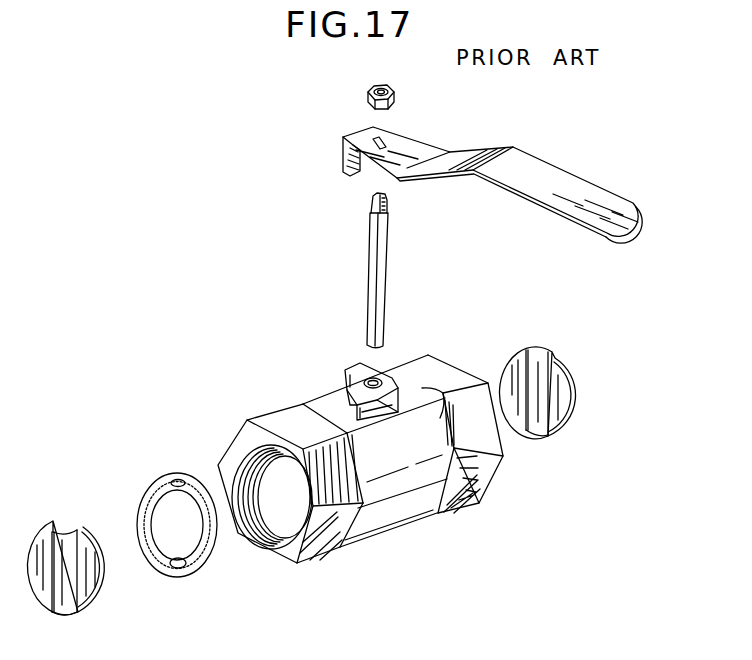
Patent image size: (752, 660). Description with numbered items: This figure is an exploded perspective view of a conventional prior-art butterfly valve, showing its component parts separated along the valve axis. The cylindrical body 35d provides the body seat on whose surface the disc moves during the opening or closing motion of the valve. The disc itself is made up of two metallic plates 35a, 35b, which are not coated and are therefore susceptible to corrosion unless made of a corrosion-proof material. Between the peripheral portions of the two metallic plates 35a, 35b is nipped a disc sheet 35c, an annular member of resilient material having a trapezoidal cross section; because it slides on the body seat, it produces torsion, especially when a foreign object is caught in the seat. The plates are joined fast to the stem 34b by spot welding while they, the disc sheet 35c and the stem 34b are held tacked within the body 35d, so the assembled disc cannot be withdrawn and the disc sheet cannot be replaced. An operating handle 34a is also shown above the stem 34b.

The handle 34a is at (557, 186).
The stem 34b is at (389, 262).
The metallic plate 35a is at (90, 593).
The metallic plate 35b is at (575, 408).
The disc sheet 35c is at (212, 557).
The cylindrical body 35d is at (290, 420).